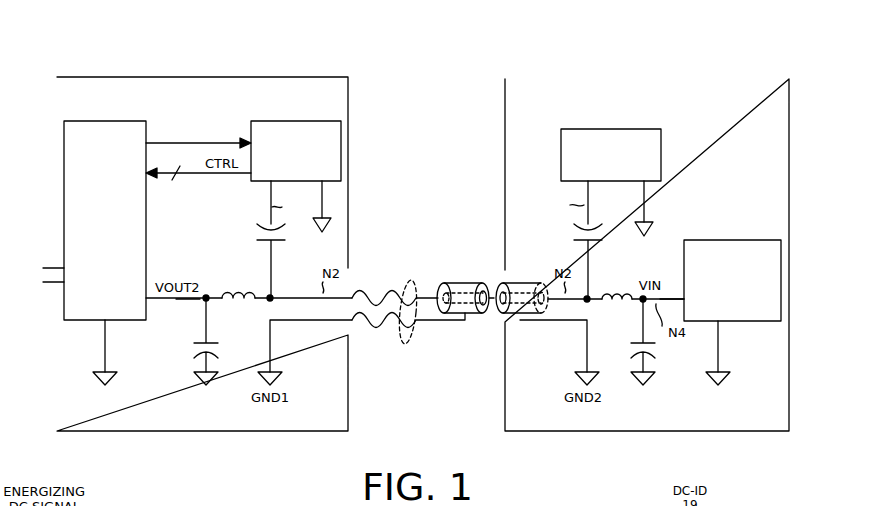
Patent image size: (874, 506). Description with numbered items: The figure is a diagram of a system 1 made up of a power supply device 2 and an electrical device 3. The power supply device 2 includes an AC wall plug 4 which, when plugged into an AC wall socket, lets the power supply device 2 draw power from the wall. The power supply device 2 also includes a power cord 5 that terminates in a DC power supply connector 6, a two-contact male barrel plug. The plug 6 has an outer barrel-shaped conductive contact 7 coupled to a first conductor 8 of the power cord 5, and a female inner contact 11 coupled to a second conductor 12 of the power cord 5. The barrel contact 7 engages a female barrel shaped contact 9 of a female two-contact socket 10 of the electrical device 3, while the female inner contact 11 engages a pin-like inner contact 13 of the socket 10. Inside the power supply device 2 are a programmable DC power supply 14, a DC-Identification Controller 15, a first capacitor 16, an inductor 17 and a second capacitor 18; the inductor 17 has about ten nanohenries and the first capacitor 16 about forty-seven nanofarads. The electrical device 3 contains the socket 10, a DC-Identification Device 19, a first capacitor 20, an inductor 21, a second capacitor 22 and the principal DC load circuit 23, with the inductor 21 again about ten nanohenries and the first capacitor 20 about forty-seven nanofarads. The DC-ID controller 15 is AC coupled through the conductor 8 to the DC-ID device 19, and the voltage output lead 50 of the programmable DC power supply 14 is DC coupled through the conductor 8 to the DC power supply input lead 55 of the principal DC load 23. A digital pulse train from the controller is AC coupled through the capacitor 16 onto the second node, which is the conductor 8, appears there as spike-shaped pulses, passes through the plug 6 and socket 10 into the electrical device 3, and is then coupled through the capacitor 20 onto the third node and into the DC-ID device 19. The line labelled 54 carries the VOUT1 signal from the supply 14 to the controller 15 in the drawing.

The system 1 is at (449, 51).
The power supply device 2 is at (292, 77).
The electrical device 3 is at (741, 79).
The AC wall plug 4 is at (34, 280).
The power cord 5 is at (406, 345).
The DC power supply connector 6 is at (459, 280).
The outer barrel-shaped conductive contact 7 is at (478, 290).
The first conductor 8 is at (361, 292).
The female barrel shaped contact 9 is at (512, 313).
The female two-contact socket 10 is at (523, 280).
The female inner contact 11 is at (485, 310).
The second conductor 12 is at (370, 328).
The pin-like inner contact 13 is at (495, 291).
The programmable DC power supply 14 is at (97, 142).
The DC-Identification Controller 15 is at (306, 121).
The first capacitor 16 is at (256, 233).
The inductor 17 is at (240, 291).
The second capacitor 18 is at (216, 342).
The DC-Identification Device 19 is at (593, 129).
The first capacitor 20 is at (594, 244).
The inductor 21 is at (623, 290).
The second capacitor 22 is at (634, 342).
The principal DC load circuit 23 is at (724, 240).
The voltage output lead 50 is at (178, 299).
The VOUT1 output line 54 is at (161, 143).
The DC power supply input lead 55 is at (673, 296).